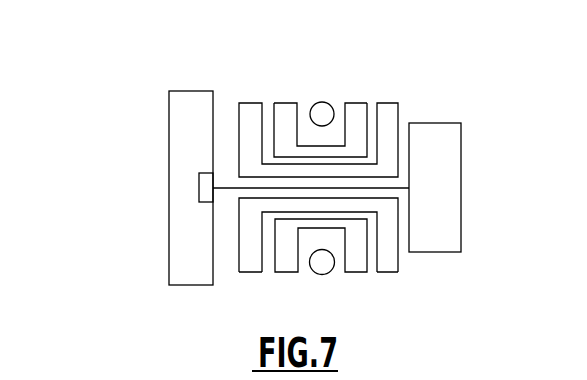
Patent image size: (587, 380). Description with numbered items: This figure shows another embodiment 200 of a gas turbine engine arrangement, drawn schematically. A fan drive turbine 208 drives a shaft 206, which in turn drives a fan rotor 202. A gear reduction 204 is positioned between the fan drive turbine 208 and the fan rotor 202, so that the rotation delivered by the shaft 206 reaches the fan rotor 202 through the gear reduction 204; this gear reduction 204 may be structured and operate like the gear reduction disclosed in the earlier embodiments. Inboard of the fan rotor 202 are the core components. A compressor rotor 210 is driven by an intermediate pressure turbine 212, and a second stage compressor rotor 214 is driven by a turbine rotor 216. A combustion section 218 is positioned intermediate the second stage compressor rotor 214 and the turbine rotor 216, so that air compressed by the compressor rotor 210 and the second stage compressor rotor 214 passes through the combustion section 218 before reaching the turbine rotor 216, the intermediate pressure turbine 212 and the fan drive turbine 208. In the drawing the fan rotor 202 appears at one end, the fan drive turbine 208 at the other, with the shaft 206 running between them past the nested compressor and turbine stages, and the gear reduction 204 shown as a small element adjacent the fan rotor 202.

The embodiment 200 is at (138, 68).
The fan rotor 202 is at (177, 137).
The gear reduction 204 is at (205, 200).
The shaft 206 is at (387, 190).
The fan drive turbine 208 is at (447, 170).
The compressor rotor 210 is at (250, 247).
The intermediate pressure turbine 212 is at (385, 262).
The second stage compressor rotor 214 is at (285, 107).
The turbine rotor 216 is at (356, 104).
The combustion section 218 is at (320, 103).